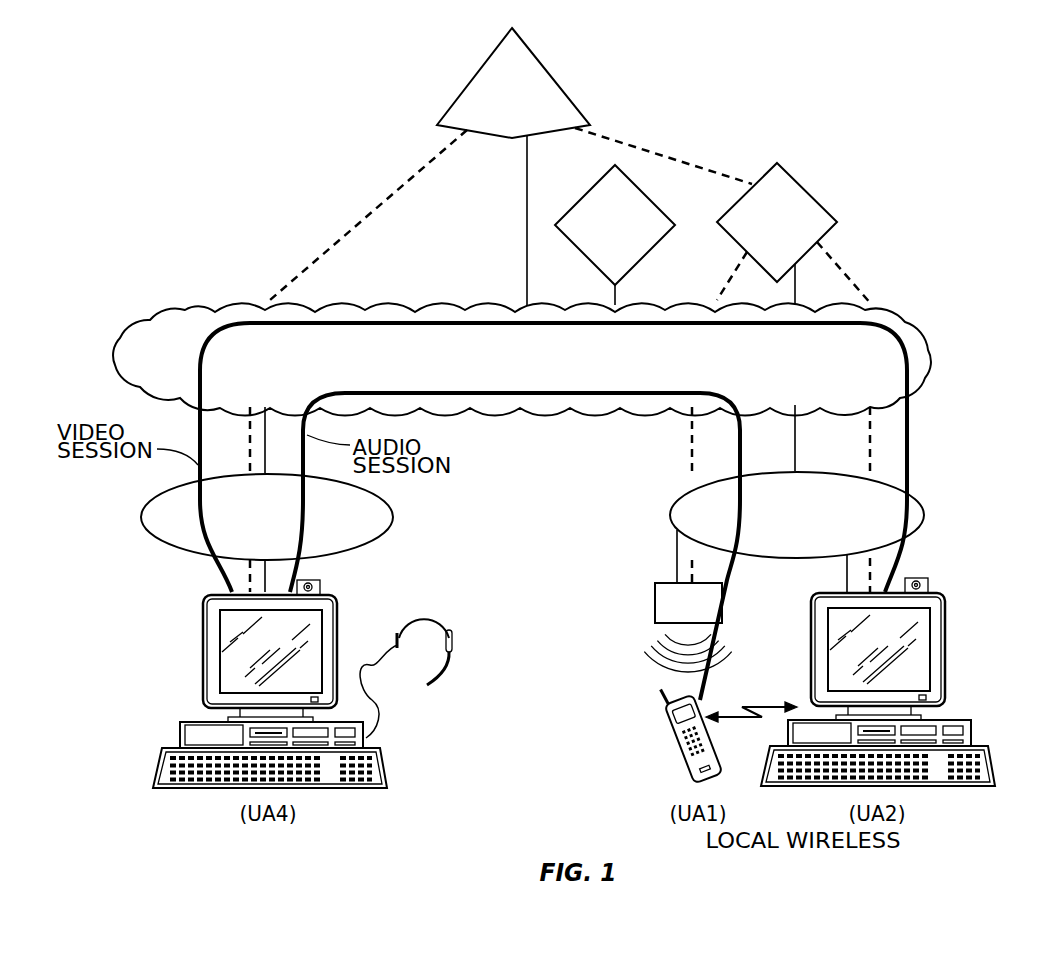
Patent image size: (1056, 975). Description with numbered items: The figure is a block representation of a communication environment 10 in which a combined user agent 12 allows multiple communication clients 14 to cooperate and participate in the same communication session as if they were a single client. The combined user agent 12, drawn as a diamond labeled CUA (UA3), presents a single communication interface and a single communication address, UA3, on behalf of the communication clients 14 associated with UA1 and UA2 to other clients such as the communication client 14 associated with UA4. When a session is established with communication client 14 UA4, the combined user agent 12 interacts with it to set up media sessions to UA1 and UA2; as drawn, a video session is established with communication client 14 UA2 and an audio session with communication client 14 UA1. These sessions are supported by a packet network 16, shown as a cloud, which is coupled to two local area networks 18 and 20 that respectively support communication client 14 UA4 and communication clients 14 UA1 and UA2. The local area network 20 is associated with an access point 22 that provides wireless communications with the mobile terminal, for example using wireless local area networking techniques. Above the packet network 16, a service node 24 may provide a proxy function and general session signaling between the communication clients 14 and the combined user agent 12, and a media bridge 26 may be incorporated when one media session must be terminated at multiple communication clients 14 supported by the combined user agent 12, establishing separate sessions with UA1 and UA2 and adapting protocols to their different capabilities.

The communication environment 10 is at (902, 55).
The combined user agent 12 is at (797, 182).
The communication clients 14 is at (205, 648).
The packet network 16 is at (510, 381).
The local area network 18 is at (251, 539).
The local area network 20 is at (779, 539).
The access point 22 is at (655, 596).
The service node 24 is at (542, 60).
The media bridge 26 is at (590, 186).